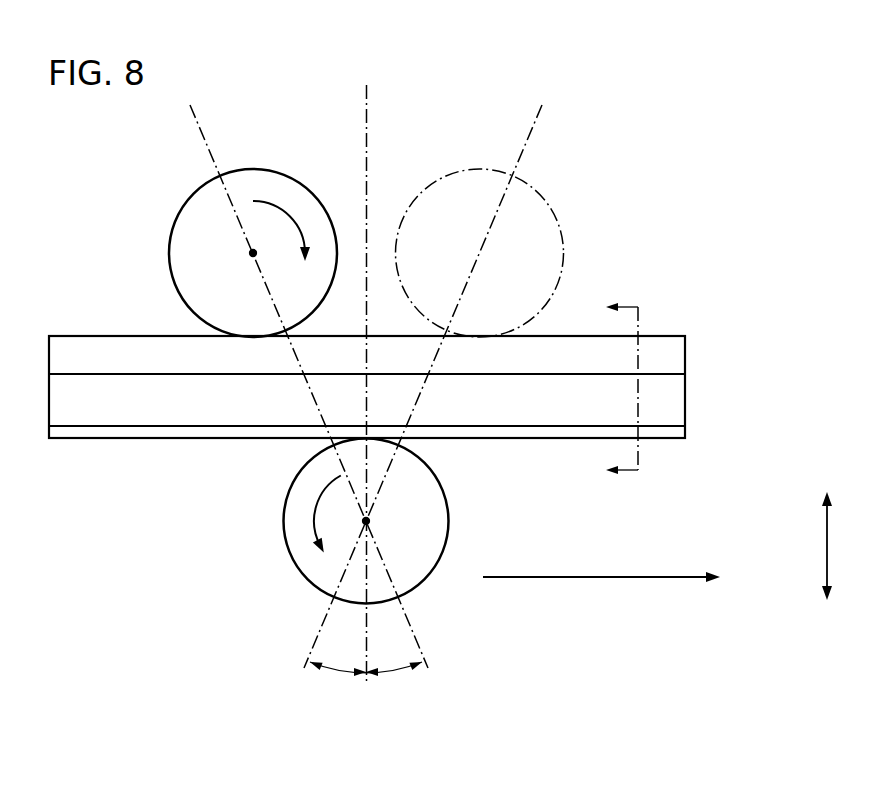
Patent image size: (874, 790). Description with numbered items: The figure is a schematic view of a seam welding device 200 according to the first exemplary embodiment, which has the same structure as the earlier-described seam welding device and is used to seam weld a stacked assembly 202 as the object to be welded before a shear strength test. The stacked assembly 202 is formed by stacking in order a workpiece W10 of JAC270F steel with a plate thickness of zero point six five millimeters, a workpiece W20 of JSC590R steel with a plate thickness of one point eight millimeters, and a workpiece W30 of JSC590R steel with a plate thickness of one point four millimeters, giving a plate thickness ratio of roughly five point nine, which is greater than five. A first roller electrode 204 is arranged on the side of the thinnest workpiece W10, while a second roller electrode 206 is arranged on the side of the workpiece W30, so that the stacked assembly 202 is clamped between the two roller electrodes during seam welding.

The seam welding device 200 is at (712, 145).
The stacked assembly 202 is at (432, 405).
The first roller electrode 204 is at (289, 491).
The second roller electrode 206 is at (169, 236).
The workpiece W10 is at (395, 448).
The workpiece W20 is at (676, 406).
The workpiece W30 is at (676, 355).